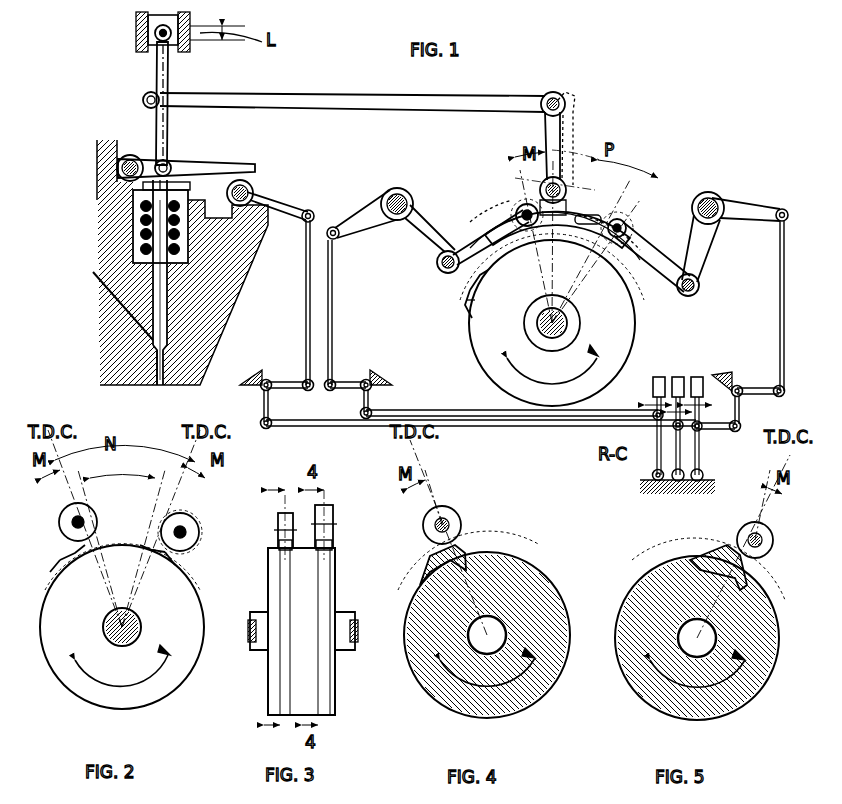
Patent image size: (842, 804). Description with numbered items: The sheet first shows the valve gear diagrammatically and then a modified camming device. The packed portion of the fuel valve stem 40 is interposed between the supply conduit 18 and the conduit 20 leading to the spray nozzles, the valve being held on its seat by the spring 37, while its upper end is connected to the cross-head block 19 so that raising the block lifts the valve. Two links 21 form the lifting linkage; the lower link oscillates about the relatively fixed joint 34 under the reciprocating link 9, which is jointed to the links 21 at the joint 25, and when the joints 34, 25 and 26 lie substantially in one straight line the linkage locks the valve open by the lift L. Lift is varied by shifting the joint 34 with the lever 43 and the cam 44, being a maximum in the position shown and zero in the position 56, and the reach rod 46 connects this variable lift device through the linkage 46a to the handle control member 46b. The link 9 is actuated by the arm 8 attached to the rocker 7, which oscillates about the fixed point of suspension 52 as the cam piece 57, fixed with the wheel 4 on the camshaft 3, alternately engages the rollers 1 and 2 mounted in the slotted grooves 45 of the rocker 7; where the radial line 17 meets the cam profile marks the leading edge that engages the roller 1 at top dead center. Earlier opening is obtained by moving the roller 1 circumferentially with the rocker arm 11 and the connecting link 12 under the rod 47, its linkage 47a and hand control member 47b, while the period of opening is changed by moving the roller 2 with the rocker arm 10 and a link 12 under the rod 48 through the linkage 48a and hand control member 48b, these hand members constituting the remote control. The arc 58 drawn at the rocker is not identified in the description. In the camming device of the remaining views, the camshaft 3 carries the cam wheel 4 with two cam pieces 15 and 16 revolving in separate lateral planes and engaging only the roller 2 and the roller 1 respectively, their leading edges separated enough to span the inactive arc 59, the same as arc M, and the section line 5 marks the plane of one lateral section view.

In FIG. 1, the roller 1 is at (520, 204).
In FIG. 2, the roller 1 is at (62, 527).
In FIG. 3, the roller 1 is at (330, 513).
In FIG. 4, the roller 1 is at (446, 511).
In FIG. 1, the roller 2 is at (628, 223).
In FIG. 2, the roller 2 is at (202, 529).
In FIG. 3, the roller 2 is at (276, 519).
In FIG. 5, the roller 2 is at (770, 531).
In FIG. 1, the camshaft 3 is at (566, 328).
In FIG. 2, the camshaft 3 is at (140, 634).
In FIG. 3, the camshaft 3 is at (342, 611).
In FIG. 4, the camshaft 3 is at (505, 647).
In FIG. 5, the camshaft 3 is at (716, 649).
In FIG. 1, the cam wheel 4 is at (600, 371).
In FIG. 2, the cam wheel 4 is at (168, 684).
In FIG. 3, the cam wheel 4 is at (325, 695).
In FIG. 4, the cam wheel 4 is at (540, 687).
In FIG. 5, the cam wheel 4 is at (730, 699).
In FIG. 1, the section line 5 is at (170, 183).
In FIG. 3, the section line 5 is at (274, 607).
In FIG. 1, the rocker 7 is at (482, 239).
In FIG. 1, the arm 8 is at (575, 133).
In FIG. 1, the link 9 is at (350, 94).
In FIG. 1, the rocker arm 10 is at (715, 261).
In FIG. 1, the rocker arm 11 is at (412, 241).
In FIG. 1, the connecting link 12 is at (468, 245).
In FIG. 2, the cam piece 15 is at (162, 559).
In FIG. 3, the cam piece 15 is at (280, 551).
In FIG. 5, the cam piece 15 is at (715, 551).
In FIG. 2, the cam piece 16 is at (68, 555).
In FIG. 3, the cam piece 16 is at (330, 549).
In FIG. 4, the cam piece 16 is at (455, 549).
In FIG. 1, the radial line 17 is at (472, 289).
In FIG. 1, the supply conduit 18 is at (92, 283).
In FIG. 1, the cross-head block 19 is at (142, 33).
In FIG. 1, the conduit 20 is at (165, 379).
In FIG. 1, the links 21 is at (152, 122).
In FIG. 1, the joint 25 is at (144, 104).
In FIG. 1, the joint 26 is at (185, 15).
In FIG. 1, the relatively fixed joint 34 is at (167, 164).
In FIG. 1, the spring 37 is at (140, 231).
In FIG. 1, the fuel valve stem 40 is at (170, 299).
In FIG. 1, the lever 43 is at (215, 163).
In FIG. 1, the cam 44 is at (252, 186).
In FIG. 1, the slotted grooves 45 is at (603, 224).
In FIG. 1, the reach rod 46 is at (306, 358).
In FIG. 1, the linkage 46a is at (272, 417).
In FIG. 1, the handle control member 46b is at (662, 376).
In FIG. 1, the rod 47 is at (334, 377).
In FIG. 1, the linkage 47a is at (398, 409).
In FIG. 1, the hand control member 47b is at (664, 376).
In FIG. 1, the rod 48 is at (778, 360).
In FIG. 1, the linkage 48a is at (733, 431).
In FIG. 1, the hand control member 48b is at (700, 376).
In FIG. 1, the fixed point of suspension 52 is at (588, 211).
In FIG. 1, the lever position 56 is at (254, 189).
In FIG. 1, the cam piece 57 is at (465, 305).
In FIG. 1, the guide arc 58 is at (555, 242).
In FIG. 2, the inactive arc 59 is at (121, 476).